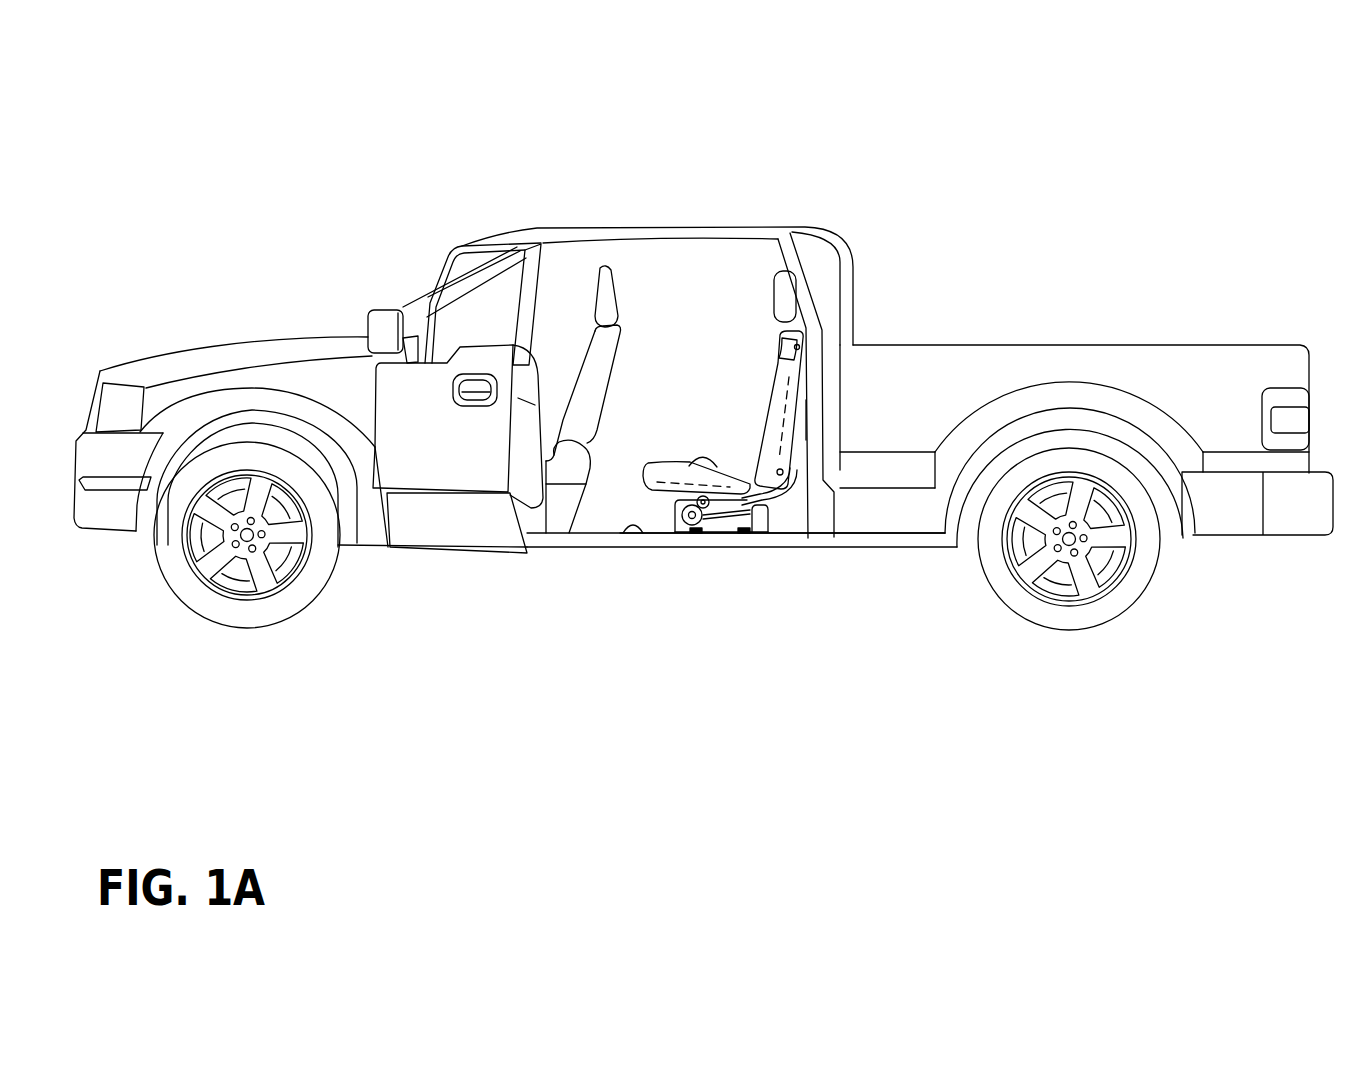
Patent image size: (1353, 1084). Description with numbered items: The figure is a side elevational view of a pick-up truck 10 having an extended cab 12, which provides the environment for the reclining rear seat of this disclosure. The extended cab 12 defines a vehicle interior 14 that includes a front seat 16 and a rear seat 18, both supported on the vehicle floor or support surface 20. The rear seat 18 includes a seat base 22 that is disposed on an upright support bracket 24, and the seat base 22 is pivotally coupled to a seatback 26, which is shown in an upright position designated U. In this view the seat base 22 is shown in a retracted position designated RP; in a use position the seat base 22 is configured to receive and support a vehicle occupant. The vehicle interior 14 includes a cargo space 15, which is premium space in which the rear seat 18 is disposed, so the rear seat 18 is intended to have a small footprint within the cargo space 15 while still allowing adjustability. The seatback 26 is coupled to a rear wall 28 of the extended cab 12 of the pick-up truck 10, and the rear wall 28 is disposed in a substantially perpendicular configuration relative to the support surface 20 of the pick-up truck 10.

The pick-up truck 10 is at (430, 228).
The extended cab 12 is at (683, 223).
The vehicle interior 14 is at (637, 268).
The cargo space 15 is at (678, 328).
The front seat 16 is at (596, 481).
The rear seat 18 is at (834, 398).
The vehicle floor or support surface 20 is at (645, 538).
The seat base 22 is at (707, 462).
The upright support bracket 24 is at (770, 527).
The seatback 26 is at (840, 420).
The rear wall 28 is at (840, 420).